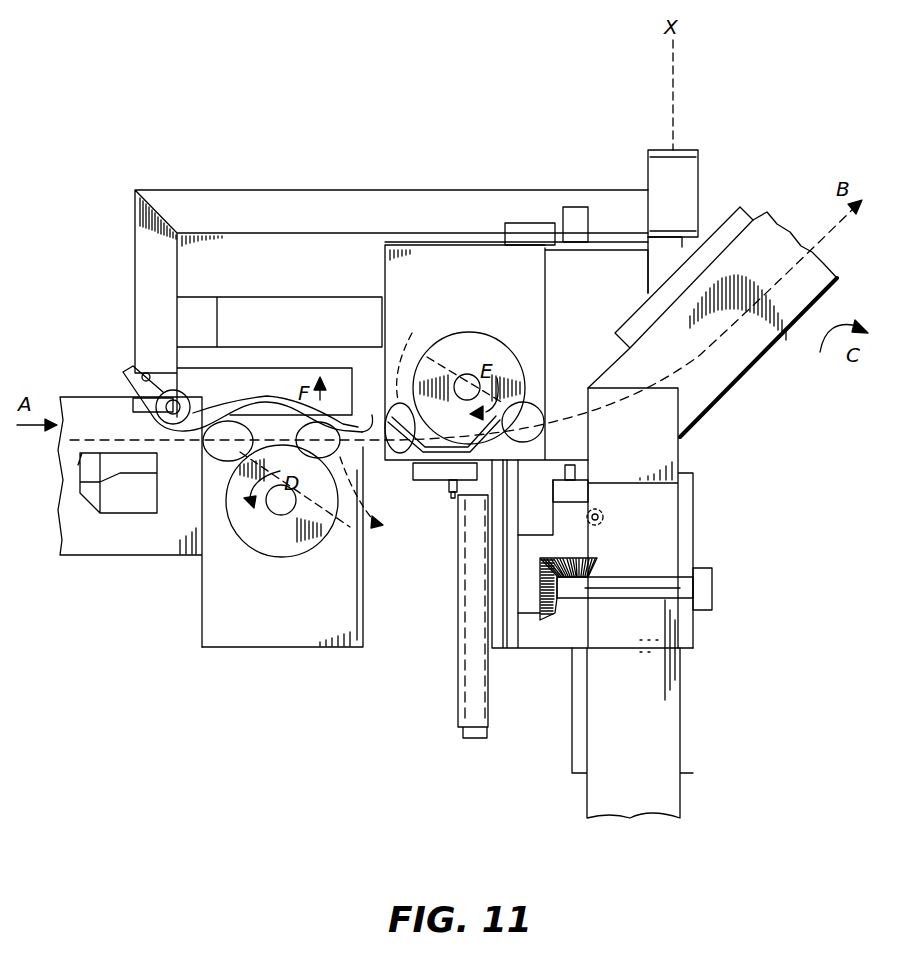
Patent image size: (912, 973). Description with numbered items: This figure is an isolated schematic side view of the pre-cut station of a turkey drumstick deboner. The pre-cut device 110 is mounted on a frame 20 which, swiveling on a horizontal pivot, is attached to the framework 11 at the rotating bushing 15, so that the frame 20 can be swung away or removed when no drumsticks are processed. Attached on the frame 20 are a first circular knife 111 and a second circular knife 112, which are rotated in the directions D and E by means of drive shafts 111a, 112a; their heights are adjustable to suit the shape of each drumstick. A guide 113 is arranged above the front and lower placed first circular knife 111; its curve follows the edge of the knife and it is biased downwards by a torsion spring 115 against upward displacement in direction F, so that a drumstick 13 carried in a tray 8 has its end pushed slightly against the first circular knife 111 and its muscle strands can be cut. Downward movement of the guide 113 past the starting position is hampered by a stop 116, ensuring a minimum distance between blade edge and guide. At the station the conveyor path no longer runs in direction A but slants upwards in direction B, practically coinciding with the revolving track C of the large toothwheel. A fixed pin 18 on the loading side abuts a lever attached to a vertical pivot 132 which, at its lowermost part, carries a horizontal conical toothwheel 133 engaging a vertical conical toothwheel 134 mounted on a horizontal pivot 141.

The frame 20 is at (326, 200).
The torsion spring 115 is at (176, 406).
The stop 116 is at (146, 372).
The guide 113 is at (123, 372).
The pre-cut device 110 is at (225, 660).
The first circular knife 111 is at (260, 538).
The drive shaft 111a is at (277, 507).
The second circular knife 112 is at (445, 425).
The drive shaft 112a is at (466, 383).
The drumstick 13 is at (412, 335).
The tray 8 is at (398, 410).
The fixed pin 18 is at (457, 494).
The framework 11 is at (678, 250).
The rotating bushing 15 is at (672, 173).
The vertical pivot 132 is at (575, 462).
The horizontal conical toothwheel 133 is at (600, 565).
The vertical conical toothwheel 134 is at (548, 620).
The horizontal pivot 141 is at (652, 592).